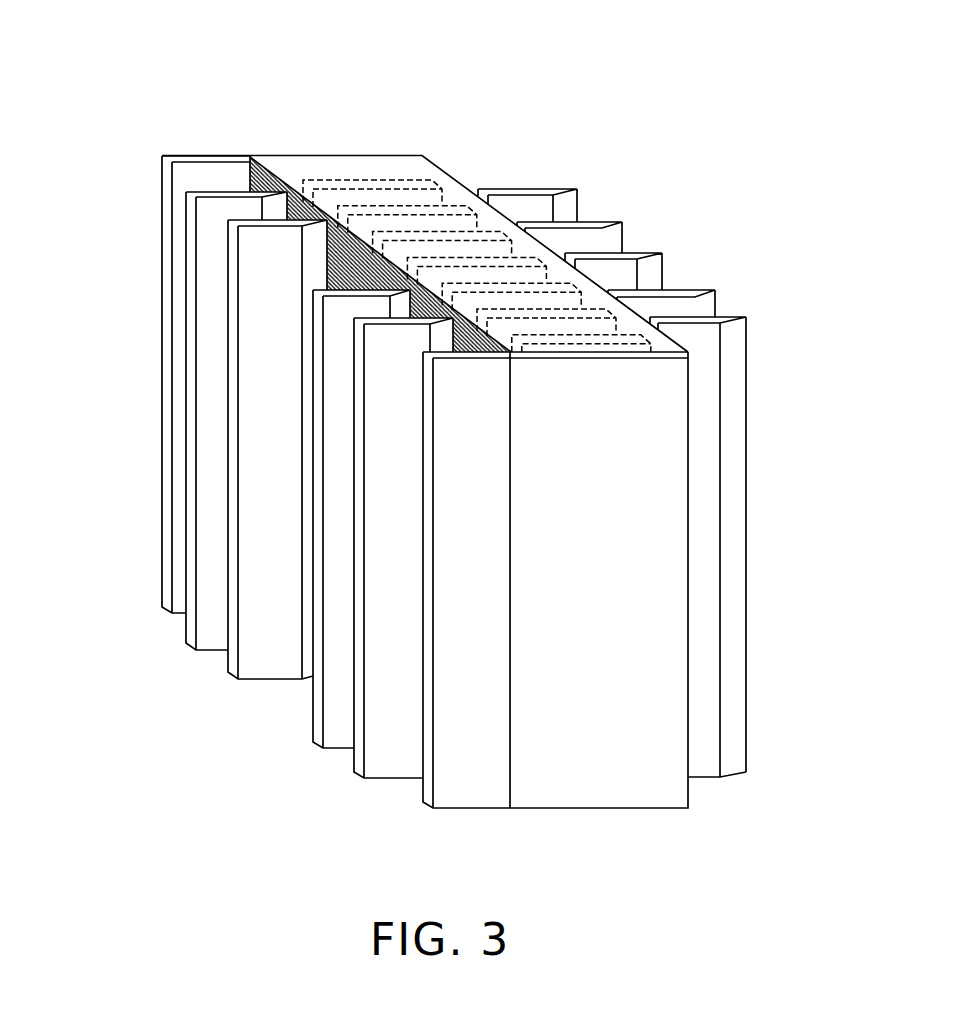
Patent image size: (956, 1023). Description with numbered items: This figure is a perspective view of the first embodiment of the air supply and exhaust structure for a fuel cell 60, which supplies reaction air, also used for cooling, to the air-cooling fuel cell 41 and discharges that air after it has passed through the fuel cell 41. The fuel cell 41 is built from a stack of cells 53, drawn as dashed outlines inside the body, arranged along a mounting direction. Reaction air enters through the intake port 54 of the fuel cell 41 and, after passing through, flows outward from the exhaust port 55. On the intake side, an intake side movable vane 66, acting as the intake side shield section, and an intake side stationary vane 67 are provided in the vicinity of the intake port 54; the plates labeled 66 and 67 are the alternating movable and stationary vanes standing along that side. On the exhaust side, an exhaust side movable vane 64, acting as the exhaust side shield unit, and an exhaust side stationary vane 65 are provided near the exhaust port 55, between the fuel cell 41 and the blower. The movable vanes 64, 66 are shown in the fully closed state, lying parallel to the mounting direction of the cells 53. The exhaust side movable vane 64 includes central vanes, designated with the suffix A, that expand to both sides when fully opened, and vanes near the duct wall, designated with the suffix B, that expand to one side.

The air supply and exhaust structure for a fuel cell 60 is at (517, 82).
The fuel cell 41 is at (316, 155).
The cells 53 is at (438, 187).
The intake port 54 is at (273, 185).
The exhaust port 55 is at (500, 202).
The exhaust side movable vane 64 is at (550, 190).
The exhaust side stationary vane 65 is at (602, 221).
The intake side movable vane 66 is at (185, 232).
The intake side stationary vane 67 is at (227, 460).